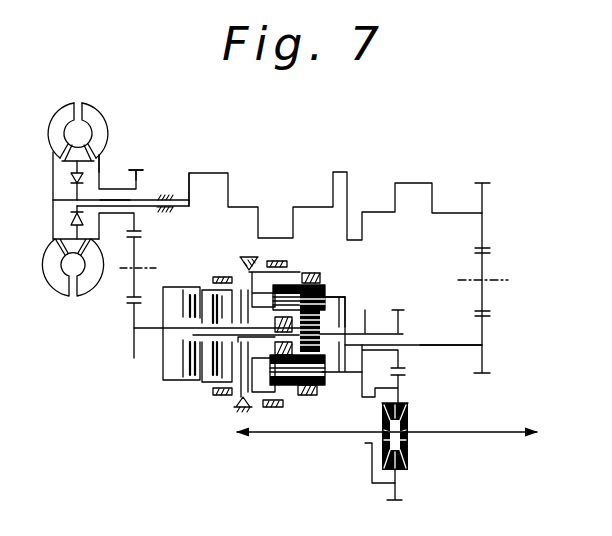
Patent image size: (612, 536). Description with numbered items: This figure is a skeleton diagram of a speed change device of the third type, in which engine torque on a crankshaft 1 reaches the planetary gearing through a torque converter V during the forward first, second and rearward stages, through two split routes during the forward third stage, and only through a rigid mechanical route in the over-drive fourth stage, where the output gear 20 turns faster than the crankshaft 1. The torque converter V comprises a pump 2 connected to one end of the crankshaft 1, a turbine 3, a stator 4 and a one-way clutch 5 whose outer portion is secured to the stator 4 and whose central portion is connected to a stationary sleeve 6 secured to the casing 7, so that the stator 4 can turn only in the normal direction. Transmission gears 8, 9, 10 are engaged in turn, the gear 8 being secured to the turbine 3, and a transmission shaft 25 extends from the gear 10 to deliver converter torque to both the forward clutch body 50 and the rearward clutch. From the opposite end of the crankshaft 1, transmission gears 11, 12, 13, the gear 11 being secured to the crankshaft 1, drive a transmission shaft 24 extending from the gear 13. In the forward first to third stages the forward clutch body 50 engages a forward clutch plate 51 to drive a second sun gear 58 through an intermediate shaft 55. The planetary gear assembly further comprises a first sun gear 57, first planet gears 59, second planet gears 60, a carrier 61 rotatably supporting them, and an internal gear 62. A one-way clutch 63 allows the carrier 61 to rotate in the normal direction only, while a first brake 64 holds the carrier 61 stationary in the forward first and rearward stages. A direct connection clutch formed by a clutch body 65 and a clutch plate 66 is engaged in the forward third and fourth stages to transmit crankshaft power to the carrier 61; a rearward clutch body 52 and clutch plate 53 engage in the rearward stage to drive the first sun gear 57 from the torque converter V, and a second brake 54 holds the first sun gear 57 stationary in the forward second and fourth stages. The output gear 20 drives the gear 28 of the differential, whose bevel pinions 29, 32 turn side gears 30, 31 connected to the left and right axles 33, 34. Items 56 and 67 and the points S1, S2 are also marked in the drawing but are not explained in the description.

The torque converter V is at (88, 97).
The crankshaft 1 is at (451, 213).
The pump 2 is at (56, 114).
The turbine 3 is at (100, 116).
The stator 4 is at (55, 168).
The one-way clutch 5 is at (101, 168).
The stationary sleeve 6 is at (118, 199).
The casing 7 is at (168, 196).
The transmission gear 8 is at (139, 171).
The transmission gear 9 is at (134, 281).
The transmission gear 10 is at (133, 338).
The transmission gear 11 is at (487, 232).
The transmission gear 12 is at (487, 268).
The transmission gear 13 is at (487, 335).
The output gear 20 is at (469, 278).
The transmission shaft 24 is at (449, 344).
The transmission shaft 25 is at (163, 355).
The gear 28 is at (400, 373).
The bevel pinion 29 is at (402, 404).
The side gear 30 is at (382, 420).
The side gear 31 is at (410, 425).
The bevel pinion 32 is at (396, 474).
The axle 33 is at (303, 434).
The axle 34 is at (483, 435).
The forward clutch body 50 is at (183, 357).
The forward clutch plate 51 is at (190, 379).
The rearward clutch body 52 is at (207, 372).
The rearward clutch plate 53 is at (216, 380).
The second brake 54 is at (222, 393).
The intermediate shaft 55 is at (235, 393).
The brake bracket 56 is at (263, 404).
The first sun gear 57 is at (275, 320).
The second sun gear 58 is at (386, 334).
The first planet gears 59 is at (303, 272).
The second planet gears 60 is at (338, 262).
The carrier 61 is at (273, 316).
The internal gear 62 is at (325, 283).
The one-way clutch 63 is at (247, 256).
The first brake 64 is at (278, 258).
The clutch body 65 is at (341, 295).
The clutch plate 66 is at (347, 318).
The fork pivot 67 is at (398, 308).
The first sensor S1 is at (163, 321).
The second sensor S2 is at (342, 349).